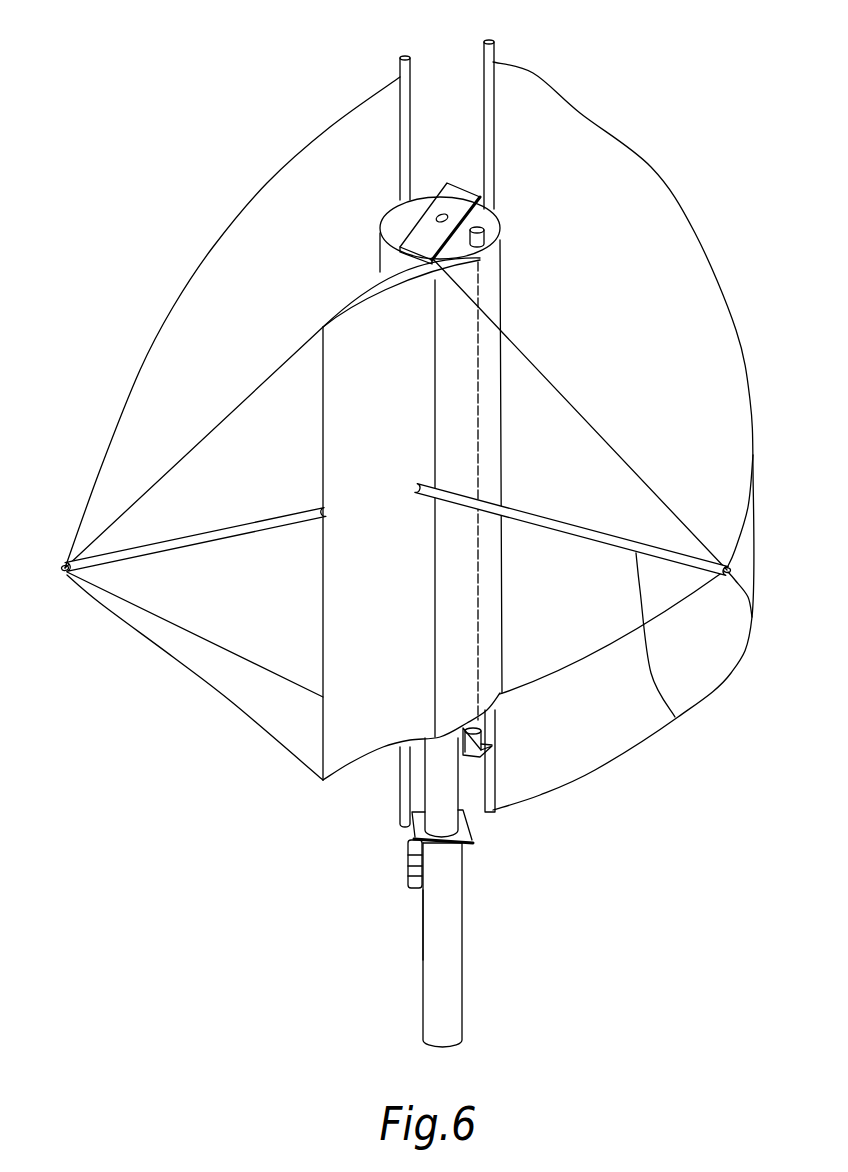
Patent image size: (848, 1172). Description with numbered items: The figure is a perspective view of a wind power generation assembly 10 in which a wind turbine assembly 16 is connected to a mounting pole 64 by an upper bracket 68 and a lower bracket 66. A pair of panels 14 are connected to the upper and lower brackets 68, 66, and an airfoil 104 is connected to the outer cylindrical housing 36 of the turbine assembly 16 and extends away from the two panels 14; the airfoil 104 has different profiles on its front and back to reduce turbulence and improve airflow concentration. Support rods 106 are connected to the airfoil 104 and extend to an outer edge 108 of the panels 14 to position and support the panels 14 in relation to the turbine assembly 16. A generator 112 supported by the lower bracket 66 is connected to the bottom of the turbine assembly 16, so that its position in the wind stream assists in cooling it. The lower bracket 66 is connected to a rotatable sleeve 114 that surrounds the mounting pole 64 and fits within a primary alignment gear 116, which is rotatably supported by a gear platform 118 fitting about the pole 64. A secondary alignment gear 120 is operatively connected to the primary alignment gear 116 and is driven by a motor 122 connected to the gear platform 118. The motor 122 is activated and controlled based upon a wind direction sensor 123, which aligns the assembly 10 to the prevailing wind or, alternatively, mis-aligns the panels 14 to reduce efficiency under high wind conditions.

The assembly 10 is at (648, 72).
The panels 14 is at (266, 286).
The wind turbine assembly 16 is at (500, 262).
The outer cylindrical housing 36 is at (445, 624).
The mounting pole 64 is at (462, 960).
The lower bracket 66 is at (481, 749).
The upper bracket 68 is at (455, 197).
The airfoil 104 is at (360, 449).
The support rods 106 is at (125, 565).
The outer edge 108 is at (64, 565).
The generator 112 is at (492, 745).
The rotatable sleeve 114 is at (462, 797).
The primary alignment gear 116 is at (450, 843).
The gear platform 118 is at (442, 845).
The secondary alignment gear 120 is at (411, 818).
The motor 122 is at (408, 855).
The wind direction sensor 123 is at (423, 927).